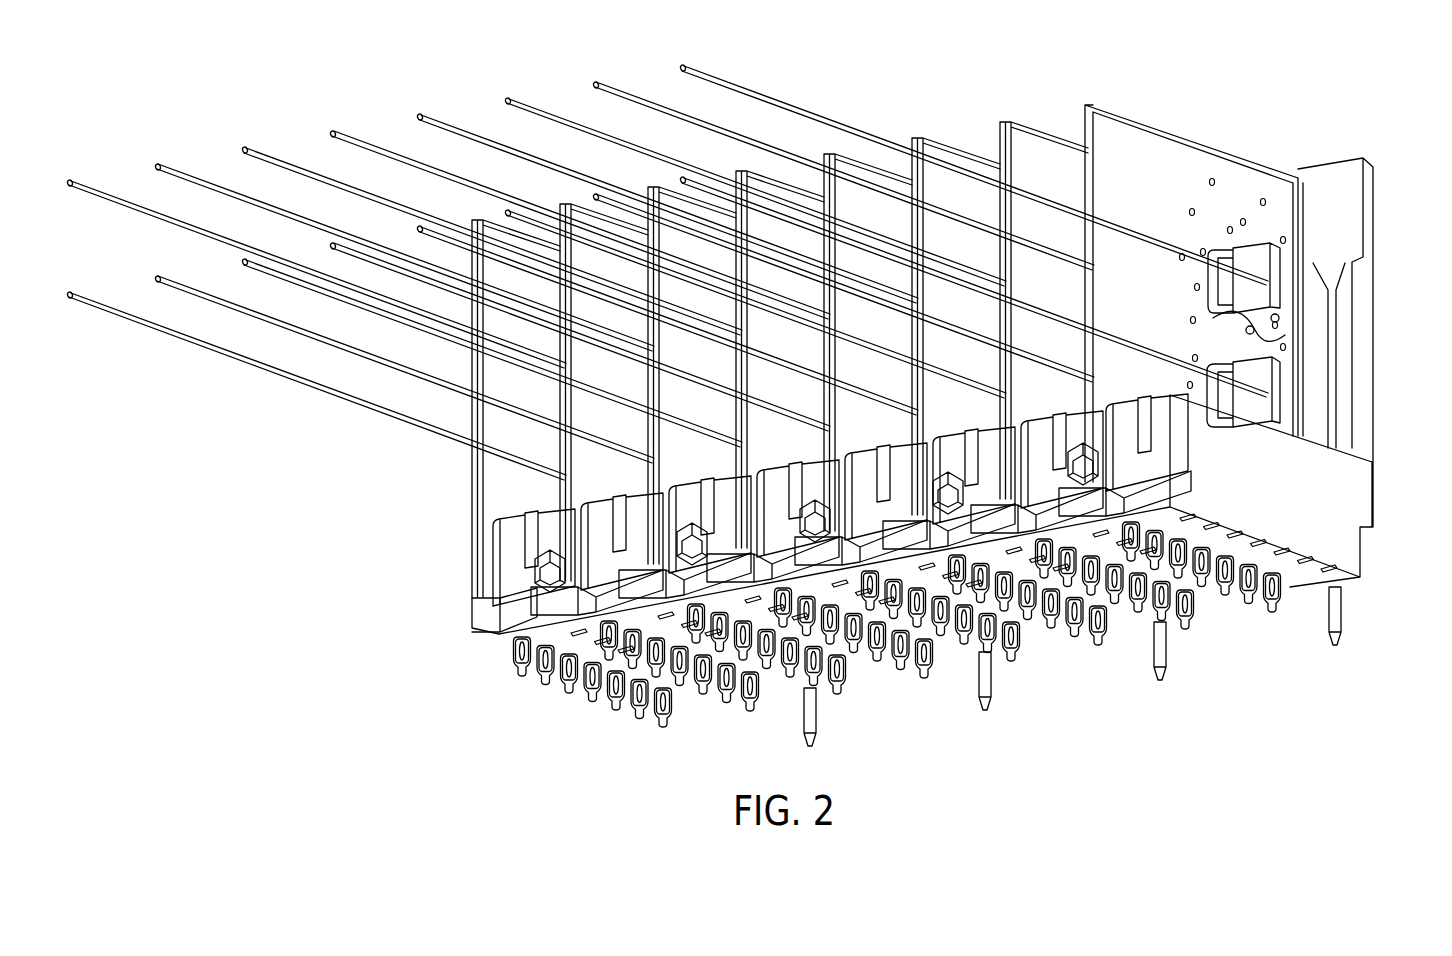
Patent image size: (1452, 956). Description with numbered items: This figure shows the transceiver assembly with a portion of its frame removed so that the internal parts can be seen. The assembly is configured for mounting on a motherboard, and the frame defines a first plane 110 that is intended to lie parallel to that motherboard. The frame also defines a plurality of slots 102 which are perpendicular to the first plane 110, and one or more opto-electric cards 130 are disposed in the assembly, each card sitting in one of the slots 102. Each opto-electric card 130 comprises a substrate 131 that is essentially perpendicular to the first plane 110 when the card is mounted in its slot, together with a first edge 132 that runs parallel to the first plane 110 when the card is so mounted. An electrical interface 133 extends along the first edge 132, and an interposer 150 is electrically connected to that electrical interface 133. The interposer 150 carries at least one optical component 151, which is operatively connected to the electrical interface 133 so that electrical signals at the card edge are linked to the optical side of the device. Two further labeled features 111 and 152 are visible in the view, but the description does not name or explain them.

The slots 102 is at (1307, 347).
The first plane 110 is at (513, 642).
The end wall 111 is at (1373, 191).
The opto-electric card 130 is at (1191, 267).
The substrate 131 is at (1218, 190).
The first edge 132 is at (478, 598).
The electrical interface 133 is at (522, 672).
The interposer 150 is at (1277, 362).
The optical component 151 is at (1265, 397).
The wafer frame 152 is at (1027, 188).